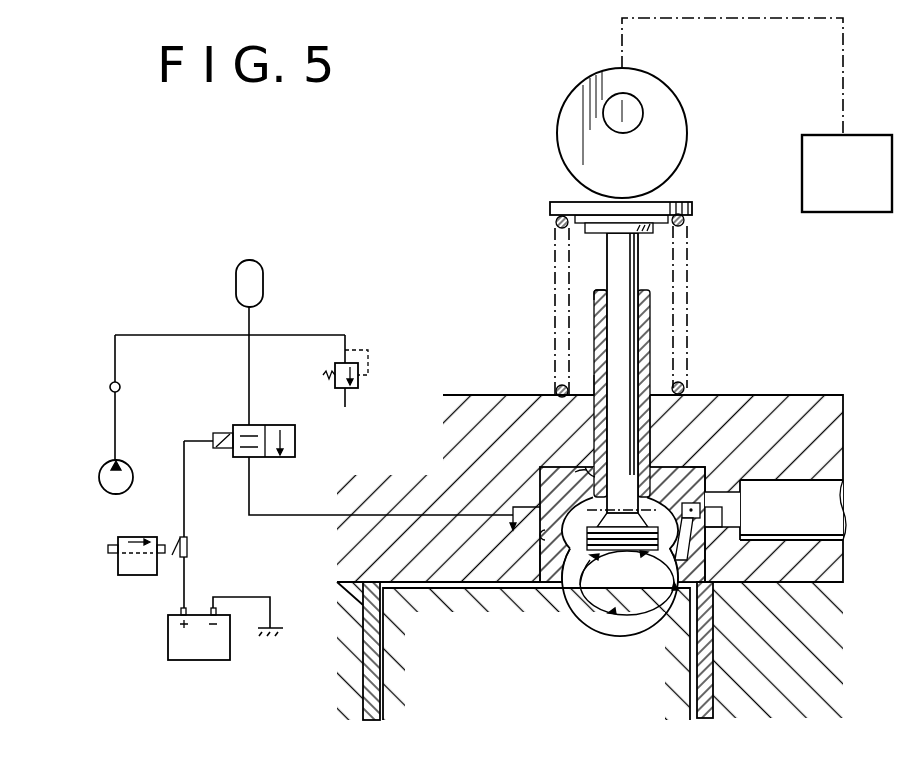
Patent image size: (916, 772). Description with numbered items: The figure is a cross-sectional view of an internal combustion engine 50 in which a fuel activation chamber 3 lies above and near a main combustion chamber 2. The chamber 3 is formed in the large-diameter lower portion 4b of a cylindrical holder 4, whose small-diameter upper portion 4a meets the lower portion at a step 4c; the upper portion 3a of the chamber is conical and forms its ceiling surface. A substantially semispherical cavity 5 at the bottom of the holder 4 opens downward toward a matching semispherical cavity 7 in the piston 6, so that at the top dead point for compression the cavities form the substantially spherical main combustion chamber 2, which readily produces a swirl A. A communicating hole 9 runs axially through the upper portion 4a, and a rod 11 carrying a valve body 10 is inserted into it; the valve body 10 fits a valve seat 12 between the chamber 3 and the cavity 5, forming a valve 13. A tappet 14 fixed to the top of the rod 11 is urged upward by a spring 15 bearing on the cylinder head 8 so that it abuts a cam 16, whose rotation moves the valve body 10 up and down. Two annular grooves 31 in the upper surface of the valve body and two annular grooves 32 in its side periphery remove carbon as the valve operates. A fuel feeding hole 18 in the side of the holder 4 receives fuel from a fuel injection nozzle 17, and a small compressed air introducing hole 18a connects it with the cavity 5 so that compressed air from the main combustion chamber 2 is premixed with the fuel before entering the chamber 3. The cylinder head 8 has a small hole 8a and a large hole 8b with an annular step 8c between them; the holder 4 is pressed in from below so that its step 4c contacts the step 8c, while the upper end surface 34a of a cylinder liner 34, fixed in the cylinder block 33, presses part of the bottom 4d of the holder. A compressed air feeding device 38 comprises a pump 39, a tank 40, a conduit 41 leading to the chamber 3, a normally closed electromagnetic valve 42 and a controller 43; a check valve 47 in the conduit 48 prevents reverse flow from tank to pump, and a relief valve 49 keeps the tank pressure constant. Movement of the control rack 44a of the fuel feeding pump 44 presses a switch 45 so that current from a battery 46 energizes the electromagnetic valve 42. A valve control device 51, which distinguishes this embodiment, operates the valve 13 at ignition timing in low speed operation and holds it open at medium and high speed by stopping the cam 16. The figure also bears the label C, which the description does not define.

The main combustion chamber 2 is at (568, 600).
The fuel activation chamber 3 is at (555, 505).
The upper portion of fuel activation chamber 3a is at (588, 465).
The cylindrical holder 4 is at (650, 428).
The upper portion of holder 4a is at (643, 343).
The lower portion of holder 4b is at (707, 470).
The step of holder 4c is at (690, 470).
The bottom of holder 4d is at (545, 590).
The semispherical cavity of holder 5 is at (555, 592).
The piston 6 is at (680, 707).
The semispherical cavity of piston 7 is at (665, 615).
The cylinder head 8 is at (497, 460).
The small-diameter hole of cylinder head 8a is at (592, 380).
The large-diameter hole of cylinder head 8b is at (548, 540).
The annular step of cylinder head 8c is at (580, 468).
The communicating hole 9 is at (605, 308).
The valve body 10 is at (620, 564).
The rod 11 is at (593, 352).
The valve seat 12 is at (548, 555).
The valve 13 is at (585, 595).
The tappet 14 is at (672, 210).
The spring 15 is at (688, 233).
The cam 16 is at (678, 118).
The fuel injection nozzle 17 is at (833, 500).
The fuel feeding hole 18 is at (700, 500).
The compressed air introducing hole 18a is at (706, 552).
The annular grooves of valve body upper surface 31 is at (630, 530).
The annular grooves of valve body side periphery 32 is at (592, 615).
The cylinder block 33 is at (813, 643).
The cylinder liner 34 is at (705, 680).
The upper end surface of liner 34a is at (717, 577).
The compressed air feeding device 38 is at (211, 462).
The pump 39 is at (99, 475).
The tank 40 is at (265, 283).
The conduit 41 is at (308, 515).
The electromagnetic valve 42 is at (268, 425).
The controller 43 is at (170, 553).
The fuel feeding pump 44 is at (118, 562).
The control rack 44a is at (108, 548).
The switch 45 is at (190, 548).
The battery 46 is at (168, 648).
The check valve 47 is at (110, 390).
The conduit 48 is at (113, 362).
The relief valve 49 is at (335, 365).
The internal combustion engine 50 is at (588, 371).
The valve control device 51 is at (832, 202).
The swirl A is at (633, 620).
The passage C is at (519, 510).